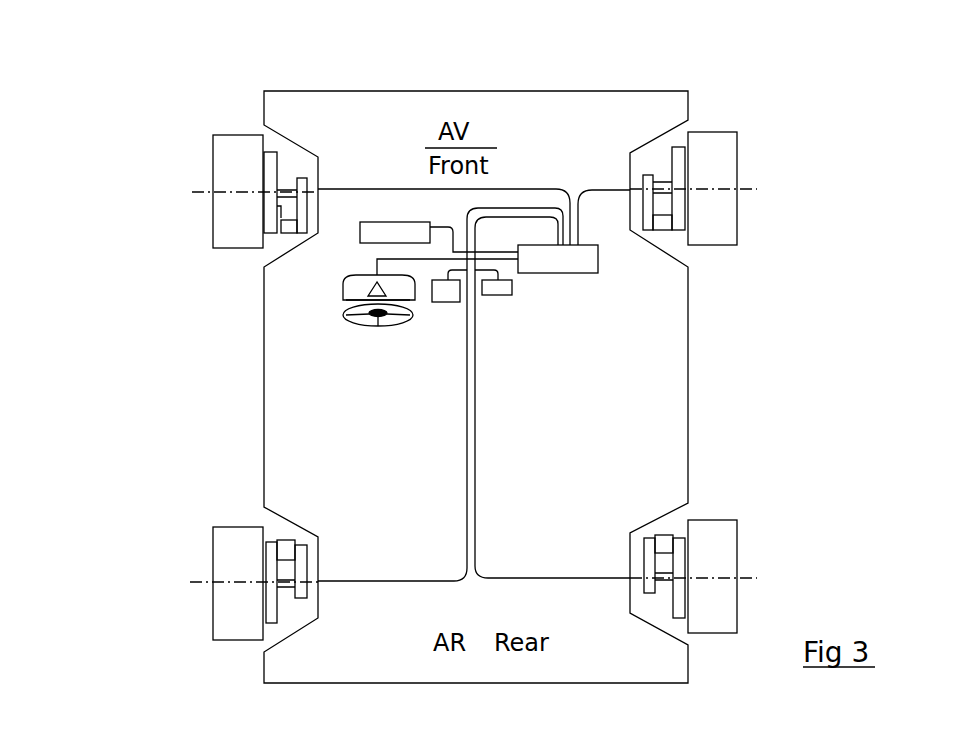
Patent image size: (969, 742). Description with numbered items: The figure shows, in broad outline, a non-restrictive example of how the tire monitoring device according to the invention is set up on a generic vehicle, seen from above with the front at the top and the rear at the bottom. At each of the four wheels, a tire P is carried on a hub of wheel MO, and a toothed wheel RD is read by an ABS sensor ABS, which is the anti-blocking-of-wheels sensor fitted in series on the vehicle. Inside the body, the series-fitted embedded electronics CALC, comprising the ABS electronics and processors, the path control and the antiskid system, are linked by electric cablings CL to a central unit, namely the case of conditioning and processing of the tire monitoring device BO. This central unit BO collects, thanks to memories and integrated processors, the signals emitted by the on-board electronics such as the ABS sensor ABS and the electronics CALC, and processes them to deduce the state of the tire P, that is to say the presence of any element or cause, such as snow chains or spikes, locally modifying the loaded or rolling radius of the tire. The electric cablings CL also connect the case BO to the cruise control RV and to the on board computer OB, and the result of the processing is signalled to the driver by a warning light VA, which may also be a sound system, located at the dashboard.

The toothed wheel RD is at (266, 147).
The hub of wheel MO is at (303, 177).
The electric cablings CL is at (597, 183).
The ABS sensor ABS is at (277, 222).
The tire P is at (215, 228).
The ABS electronic and processors, path control, antiskid system CALC is at (355, 242).
The warning light for the driver VA is at (355, 297).
The case of conditioning and processing of the tire monitoring device BO is at (600, 270).
The cruise control RV is at (475, 298).
The on board computer OB is at (460, 300).